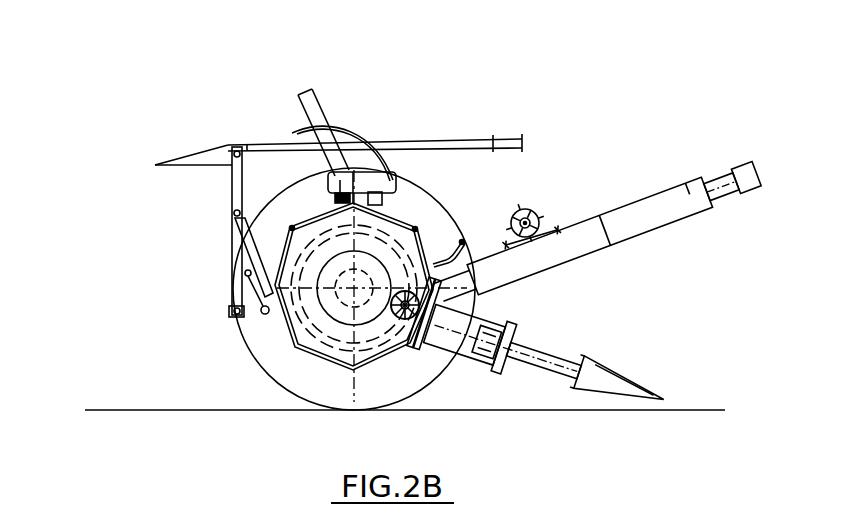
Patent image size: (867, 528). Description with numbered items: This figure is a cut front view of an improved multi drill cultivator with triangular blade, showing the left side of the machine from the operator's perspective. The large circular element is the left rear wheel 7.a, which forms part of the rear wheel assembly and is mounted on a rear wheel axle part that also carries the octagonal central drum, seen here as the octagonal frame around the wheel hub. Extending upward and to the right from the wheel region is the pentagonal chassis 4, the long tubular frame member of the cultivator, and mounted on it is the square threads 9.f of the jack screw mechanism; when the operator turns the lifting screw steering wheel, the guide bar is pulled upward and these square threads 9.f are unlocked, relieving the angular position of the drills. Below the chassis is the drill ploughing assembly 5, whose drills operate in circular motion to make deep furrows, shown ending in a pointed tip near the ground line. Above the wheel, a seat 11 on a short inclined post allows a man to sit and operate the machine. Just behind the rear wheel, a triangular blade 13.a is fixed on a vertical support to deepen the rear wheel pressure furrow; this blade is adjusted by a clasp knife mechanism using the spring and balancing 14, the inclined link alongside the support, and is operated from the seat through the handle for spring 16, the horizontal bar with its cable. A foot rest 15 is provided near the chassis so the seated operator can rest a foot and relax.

The seat 11 is at (291, 93).
The handle for spring 16 is at (452, 140).
The triangular blade 13.a is at (183, 154).
The spring and balancing 14 is at (232, 229).
The left rear wheel 7.a is at (243, 359).
The foot rest 15 is at (483, 216).
The square threads 9.f is at (562, 183).
The pentagonal chassis 4 is at (595, 211).
The drill ploughing assembly 5 is at (542, 351).